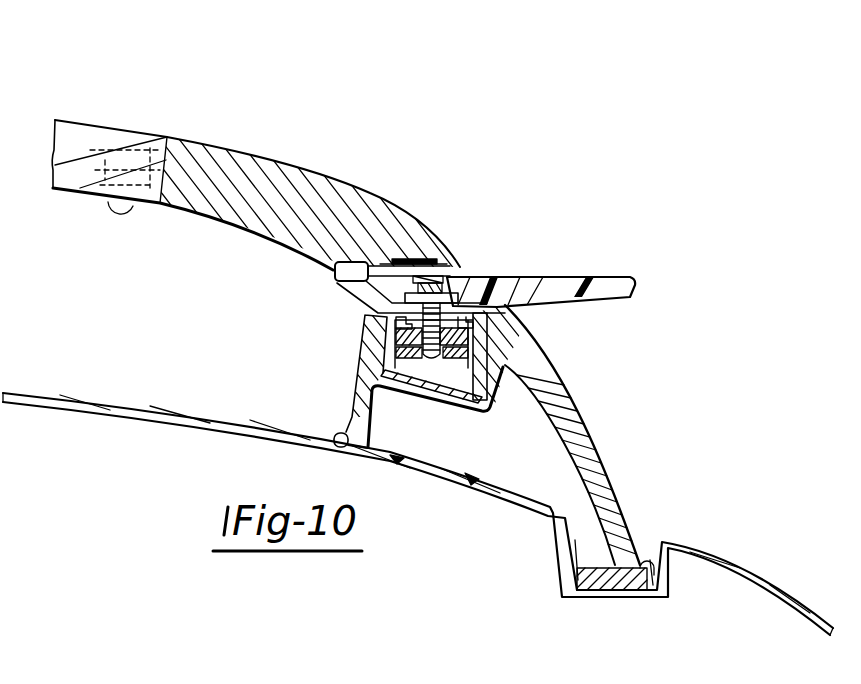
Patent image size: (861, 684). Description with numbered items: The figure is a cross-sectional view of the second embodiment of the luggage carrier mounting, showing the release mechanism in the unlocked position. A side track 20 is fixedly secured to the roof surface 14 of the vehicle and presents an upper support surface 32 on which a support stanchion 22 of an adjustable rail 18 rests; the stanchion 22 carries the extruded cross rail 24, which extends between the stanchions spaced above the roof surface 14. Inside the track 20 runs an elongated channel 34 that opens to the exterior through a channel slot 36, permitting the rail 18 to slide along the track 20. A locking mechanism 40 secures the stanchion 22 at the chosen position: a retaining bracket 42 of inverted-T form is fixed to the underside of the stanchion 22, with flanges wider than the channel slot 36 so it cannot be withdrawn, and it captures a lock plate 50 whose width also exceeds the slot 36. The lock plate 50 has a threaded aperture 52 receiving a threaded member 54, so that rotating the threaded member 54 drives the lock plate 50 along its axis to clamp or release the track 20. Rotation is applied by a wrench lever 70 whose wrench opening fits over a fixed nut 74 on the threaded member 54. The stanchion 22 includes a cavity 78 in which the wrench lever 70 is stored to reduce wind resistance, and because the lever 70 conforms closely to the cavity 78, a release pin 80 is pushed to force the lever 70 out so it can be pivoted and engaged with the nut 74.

The roof surface 14 is at (30, 393).
The adjustable rail 18 is at (49, 135).
The side track 20 is at (622, 492).
The support stanchion 22 is at (217, 157).
The cross rail 24 is at (93, 132).
The upper support surface 32 is at (383, 310).
The elongated channel 34 is at (428, 371).
The channel slot 36 is at (396, 334).
The locking mechanism 40 is at (372, 403).
The retaining bracket 42 is at (486, 411).
The lock plate 50 is at (470, 335).
The threaded aperture 52 is at (396, 354).
The threaded member 54 is at (474, 320).
The wrench lever 70 is at (637, 287).
The fixed nut 74 is at (462, 300).
The cavity 78 is at (460, 277).
The release pin 80 is at (330, 270).